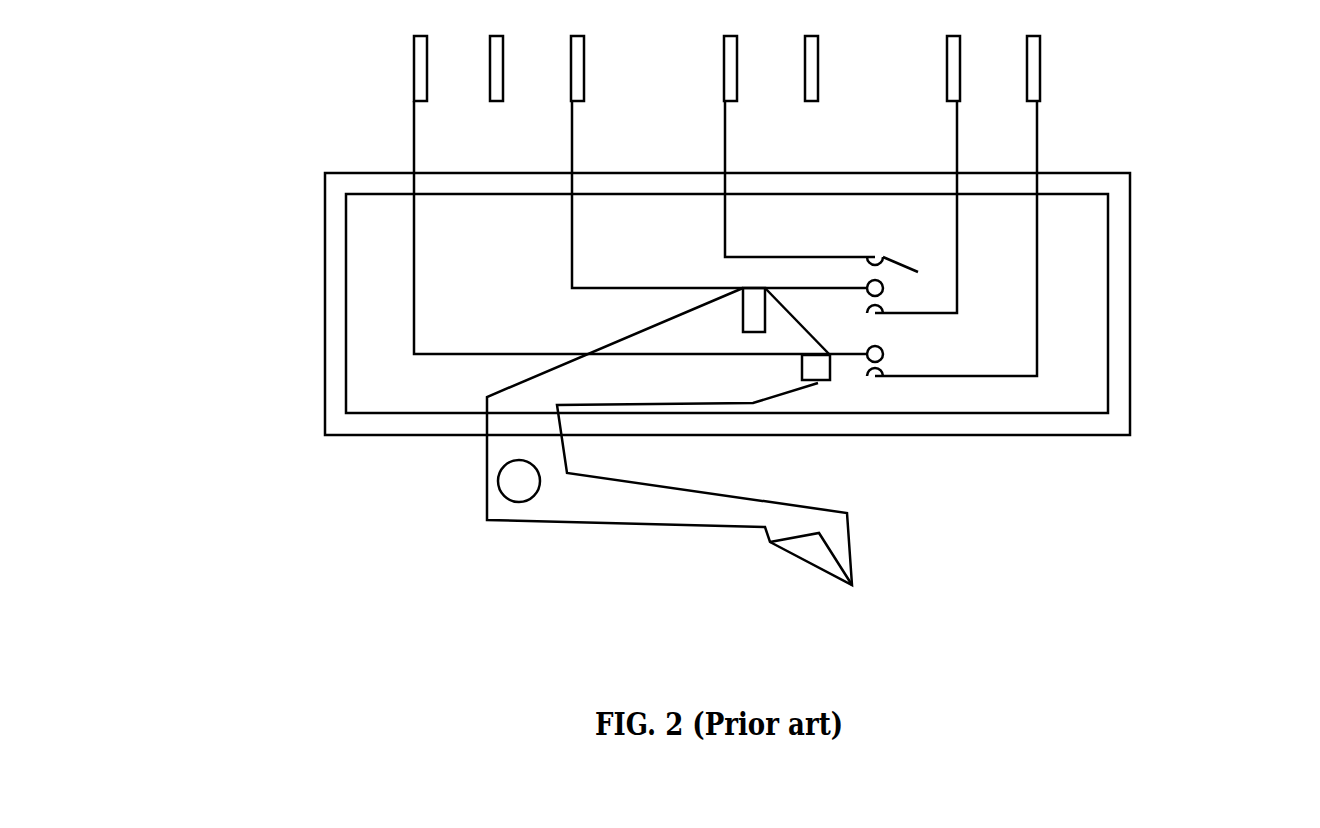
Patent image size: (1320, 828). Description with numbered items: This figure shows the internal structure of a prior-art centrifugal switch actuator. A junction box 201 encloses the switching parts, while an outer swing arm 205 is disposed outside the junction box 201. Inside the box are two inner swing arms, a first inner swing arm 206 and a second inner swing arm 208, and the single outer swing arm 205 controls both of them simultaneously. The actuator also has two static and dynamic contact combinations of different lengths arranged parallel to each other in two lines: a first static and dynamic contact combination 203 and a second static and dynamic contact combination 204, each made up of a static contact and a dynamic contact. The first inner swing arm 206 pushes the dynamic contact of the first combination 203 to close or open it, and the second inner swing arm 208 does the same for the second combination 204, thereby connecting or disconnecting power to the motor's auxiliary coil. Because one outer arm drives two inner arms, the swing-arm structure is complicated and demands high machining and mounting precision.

The junction box 201 is at (624, 322).
The first static and dynamic contact combination 203 is at (1080, 234).
The second static and dynamic contact combination 204 is at (1058, 434).
The outer swing arm 205 is at (787, 470).
The first inner swing arm 206 is at (435, 264).
The second inner swing arm 208 is at (1046, 499).